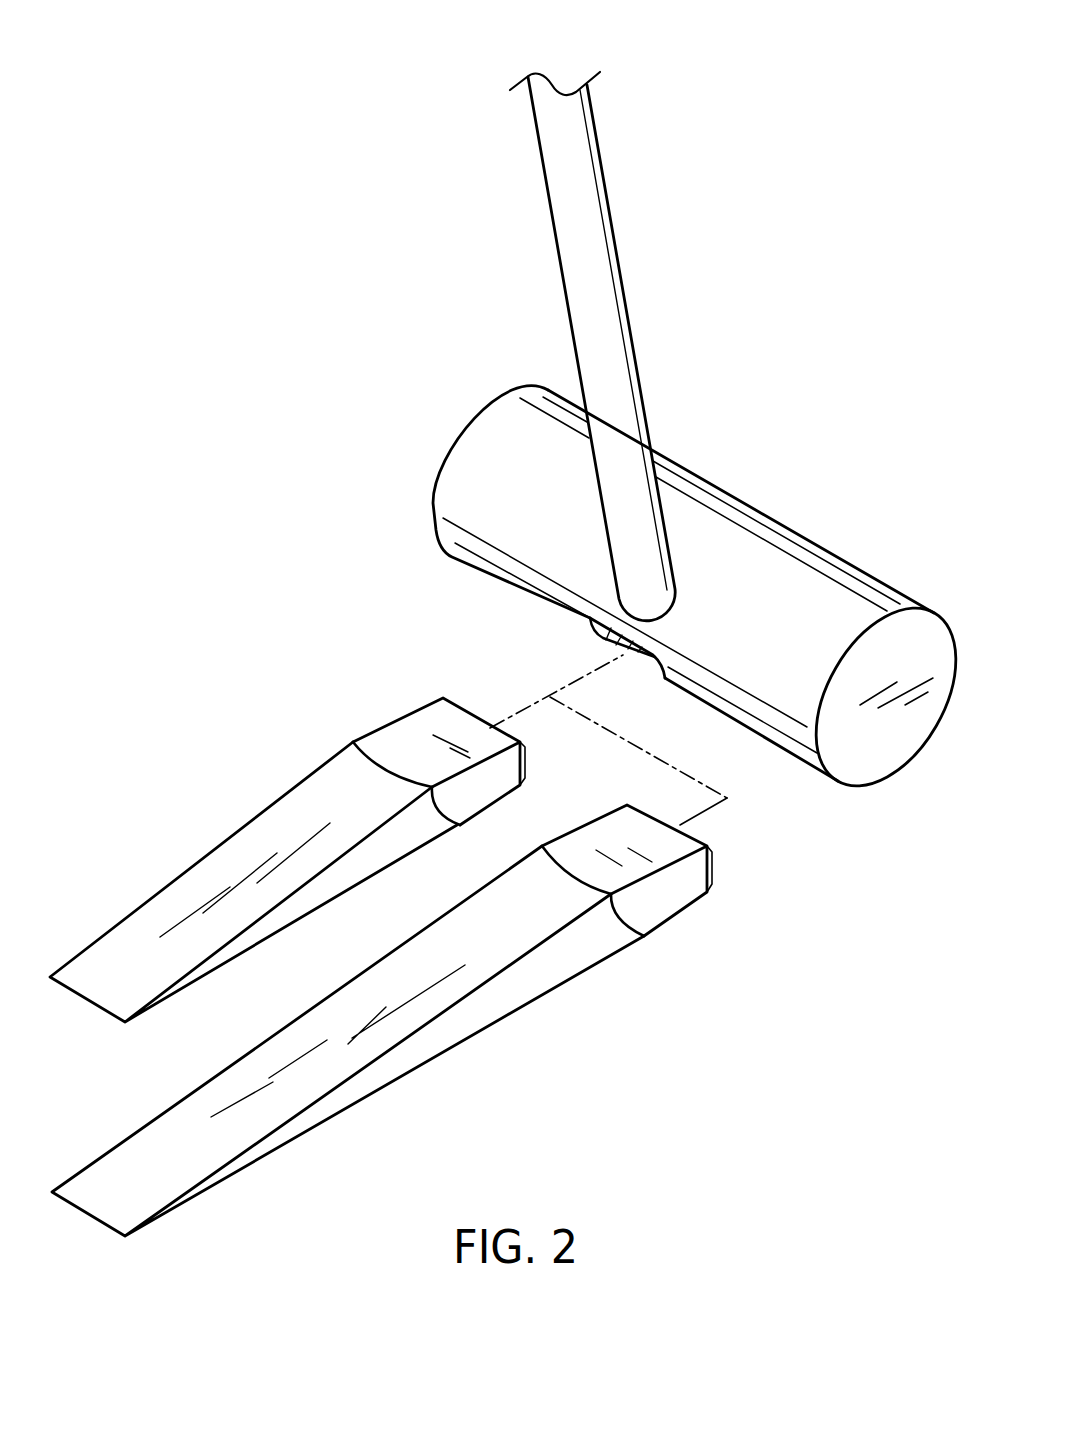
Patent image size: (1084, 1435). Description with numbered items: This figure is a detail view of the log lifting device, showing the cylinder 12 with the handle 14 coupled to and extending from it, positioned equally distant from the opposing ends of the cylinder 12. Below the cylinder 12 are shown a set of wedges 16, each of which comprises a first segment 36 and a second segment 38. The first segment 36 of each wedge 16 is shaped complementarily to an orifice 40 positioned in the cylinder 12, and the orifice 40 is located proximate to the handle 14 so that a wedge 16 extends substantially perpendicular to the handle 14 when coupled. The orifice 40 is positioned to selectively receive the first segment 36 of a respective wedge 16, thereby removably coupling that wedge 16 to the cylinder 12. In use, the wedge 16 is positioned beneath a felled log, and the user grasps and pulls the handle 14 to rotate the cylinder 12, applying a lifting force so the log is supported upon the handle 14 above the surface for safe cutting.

The cylinder 12 is at (768, 527).
The handle 14 is at (567, 247).
The wedge 16 is at (419, 964).
The first segment 36 is at (410, 740).
The second segment 38 is at (225, 870).
The orifice 40 is at (627, 630).